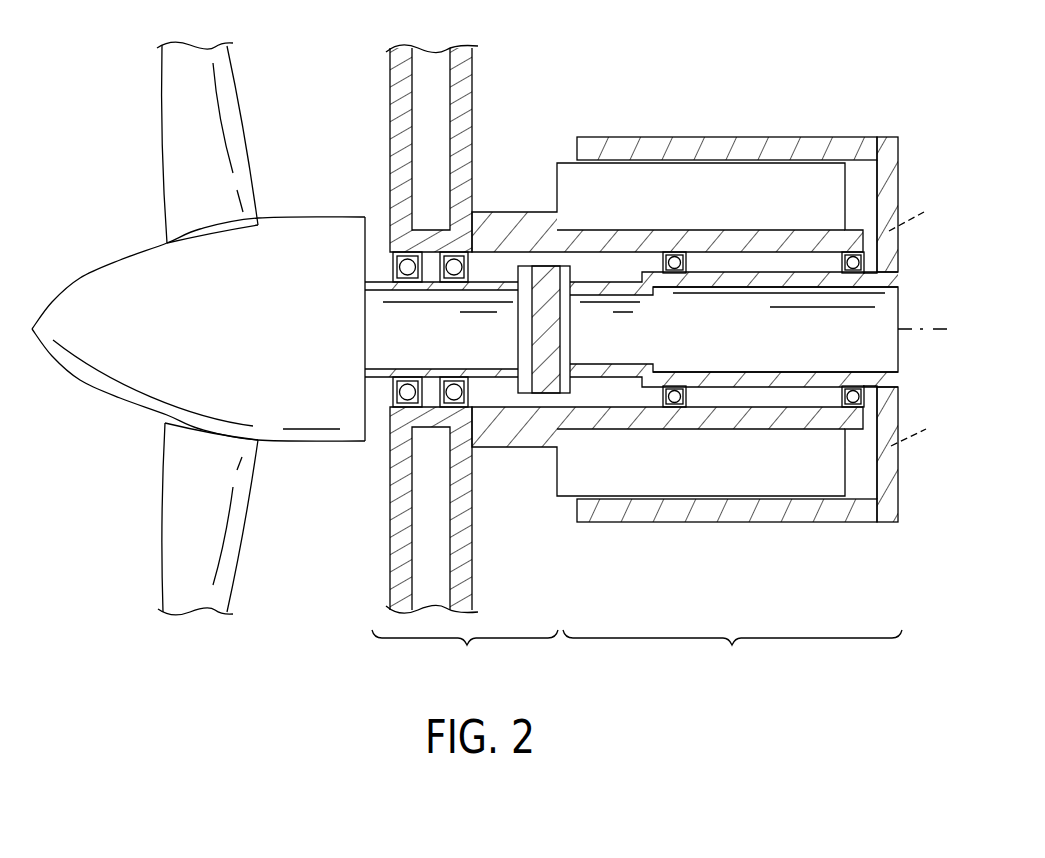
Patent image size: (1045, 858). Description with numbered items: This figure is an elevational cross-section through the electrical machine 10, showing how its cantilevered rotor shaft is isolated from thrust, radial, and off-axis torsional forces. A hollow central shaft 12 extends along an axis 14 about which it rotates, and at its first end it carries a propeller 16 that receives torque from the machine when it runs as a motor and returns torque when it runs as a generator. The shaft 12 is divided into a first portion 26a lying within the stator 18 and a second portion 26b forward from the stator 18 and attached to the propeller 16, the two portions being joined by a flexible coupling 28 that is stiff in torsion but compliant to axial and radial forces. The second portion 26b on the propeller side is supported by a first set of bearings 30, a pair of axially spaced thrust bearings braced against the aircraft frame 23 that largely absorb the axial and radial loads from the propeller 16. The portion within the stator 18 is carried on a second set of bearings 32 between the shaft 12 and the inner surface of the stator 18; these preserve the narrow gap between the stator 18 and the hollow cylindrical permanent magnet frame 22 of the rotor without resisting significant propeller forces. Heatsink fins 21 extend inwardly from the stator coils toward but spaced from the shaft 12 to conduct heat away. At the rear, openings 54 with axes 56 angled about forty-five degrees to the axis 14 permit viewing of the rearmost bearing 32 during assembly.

The electrical machine 10 is at (781, 52).
The central shaft 12 is at (415, 368).
The axis 14 is at (923, 328).
The propeller 16 is at (79, 278).
The stator 18 is at (513, 212).
The heatsink fins 21 is at (838, 478).
The permanent magnet frame 22 is at (680, 137).
The aircraft frame 23 is at (465, 92).
The first portion 26a is at (732, 654).
The second portion 26b is at (465, 654).
The flexible coupling 28 is at (557, 270).
The first set of bearings 30 is at (443, 252).
The second set of bearings 32 is at (843, 253).
The openings 54 is at (903, 217).
The axes 56 is at (910, 219).